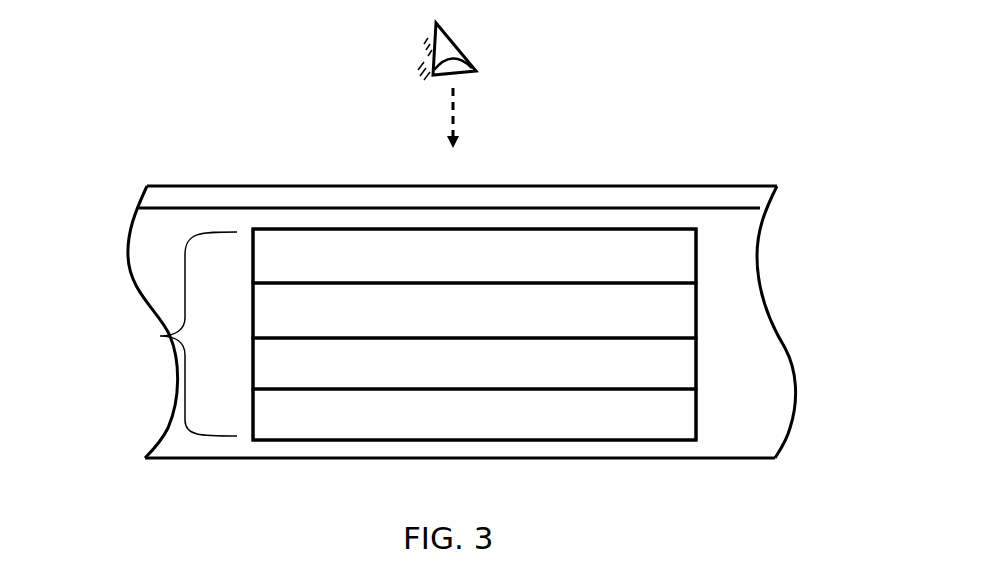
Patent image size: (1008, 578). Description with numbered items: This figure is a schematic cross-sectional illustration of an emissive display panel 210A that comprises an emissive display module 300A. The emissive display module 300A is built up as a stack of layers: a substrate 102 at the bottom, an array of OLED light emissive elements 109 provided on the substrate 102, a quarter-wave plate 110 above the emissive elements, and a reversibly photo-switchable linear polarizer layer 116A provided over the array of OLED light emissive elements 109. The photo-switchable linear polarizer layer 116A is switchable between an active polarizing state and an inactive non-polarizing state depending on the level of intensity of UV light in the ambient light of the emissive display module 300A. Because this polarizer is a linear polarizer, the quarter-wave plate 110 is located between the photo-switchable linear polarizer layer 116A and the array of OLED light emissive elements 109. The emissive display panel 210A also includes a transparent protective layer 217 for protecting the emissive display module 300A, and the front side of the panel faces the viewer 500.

The emissive display panel 210A is at (257, 138).
The transparent protective layer 217 is at (146, 198).
The emissive display module 300A is at (160, 336).
The reversibly photo-switchable linear polarizer layer 116A is at (675, 256).
The quarter-wave plate 110 is at (673, 322).
The array of OLED light emissive elements 109 is at (277, 378).
The substrate 102 is at (673, 419).
The viewer 500 is at (502, 55).